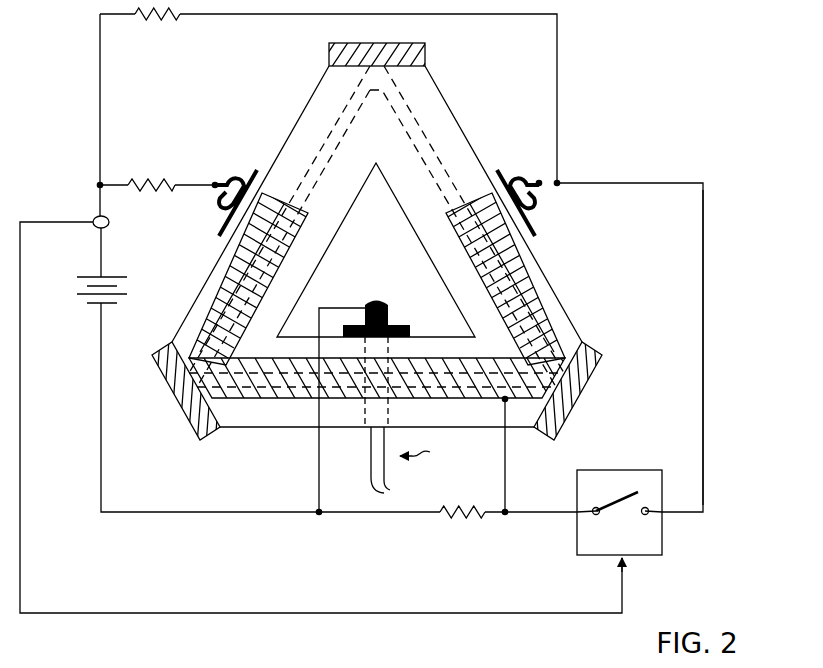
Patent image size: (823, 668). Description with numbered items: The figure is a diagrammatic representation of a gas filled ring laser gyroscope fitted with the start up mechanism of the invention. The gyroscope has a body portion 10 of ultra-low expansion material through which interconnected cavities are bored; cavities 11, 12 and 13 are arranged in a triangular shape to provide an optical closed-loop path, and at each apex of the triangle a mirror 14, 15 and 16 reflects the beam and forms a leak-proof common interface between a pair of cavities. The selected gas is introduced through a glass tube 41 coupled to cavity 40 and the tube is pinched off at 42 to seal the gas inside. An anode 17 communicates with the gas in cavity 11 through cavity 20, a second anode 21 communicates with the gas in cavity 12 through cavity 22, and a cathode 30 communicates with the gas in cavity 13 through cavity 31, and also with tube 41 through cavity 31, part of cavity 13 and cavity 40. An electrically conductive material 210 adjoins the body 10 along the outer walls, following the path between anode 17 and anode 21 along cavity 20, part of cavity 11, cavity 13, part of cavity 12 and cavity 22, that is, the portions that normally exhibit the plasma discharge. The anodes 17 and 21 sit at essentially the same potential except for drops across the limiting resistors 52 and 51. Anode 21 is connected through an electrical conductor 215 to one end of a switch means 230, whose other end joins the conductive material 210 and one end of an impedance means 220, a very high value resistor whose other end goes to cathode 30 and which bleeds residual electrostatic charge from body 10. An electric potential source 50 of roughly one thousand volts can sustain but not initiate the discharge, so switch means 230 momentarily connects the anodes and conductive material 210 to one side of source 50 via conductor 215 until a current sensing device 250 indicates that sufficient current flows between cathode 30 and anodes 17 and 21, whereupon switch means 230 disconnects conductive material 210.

The body portion 10 is at (450, 100).
The cavity 11 is at (338, 130).
The cavity 12 is at (425, 134).
The cavity 13 is at (283, 378).
The mirror 14 is at (427, 52).
The mirror 15 is at (600, 386).
The mirror 16 is at (165, 386).
The anode 17 is at (228, 176).
The cavity 20 is at (277, 192).
The anode 21 is at (533, 178).
The cavity 22 is at (497, 235).
The cathode 30 is at (373, 302).
The cavity 31 is at (386, 350).
The cavity 40 is at (386, 410).
The glass tube 41 is at (428, 448).
The pinch-off 42 is at (384, 490).
The electric potential source 50 is at (92, 305).
The limiting resistor 51 is at (152, 21).
The limiting resistor 52 is at (160, 181).
The electrically conductive material 210 is at (232, 285).
The electrical conductor 215 is at (706, 283).
The impedance means 220 is at (455, 522).
The switch means 230 is at (598, 470).
The current sensing device 250 is at (94, 217).